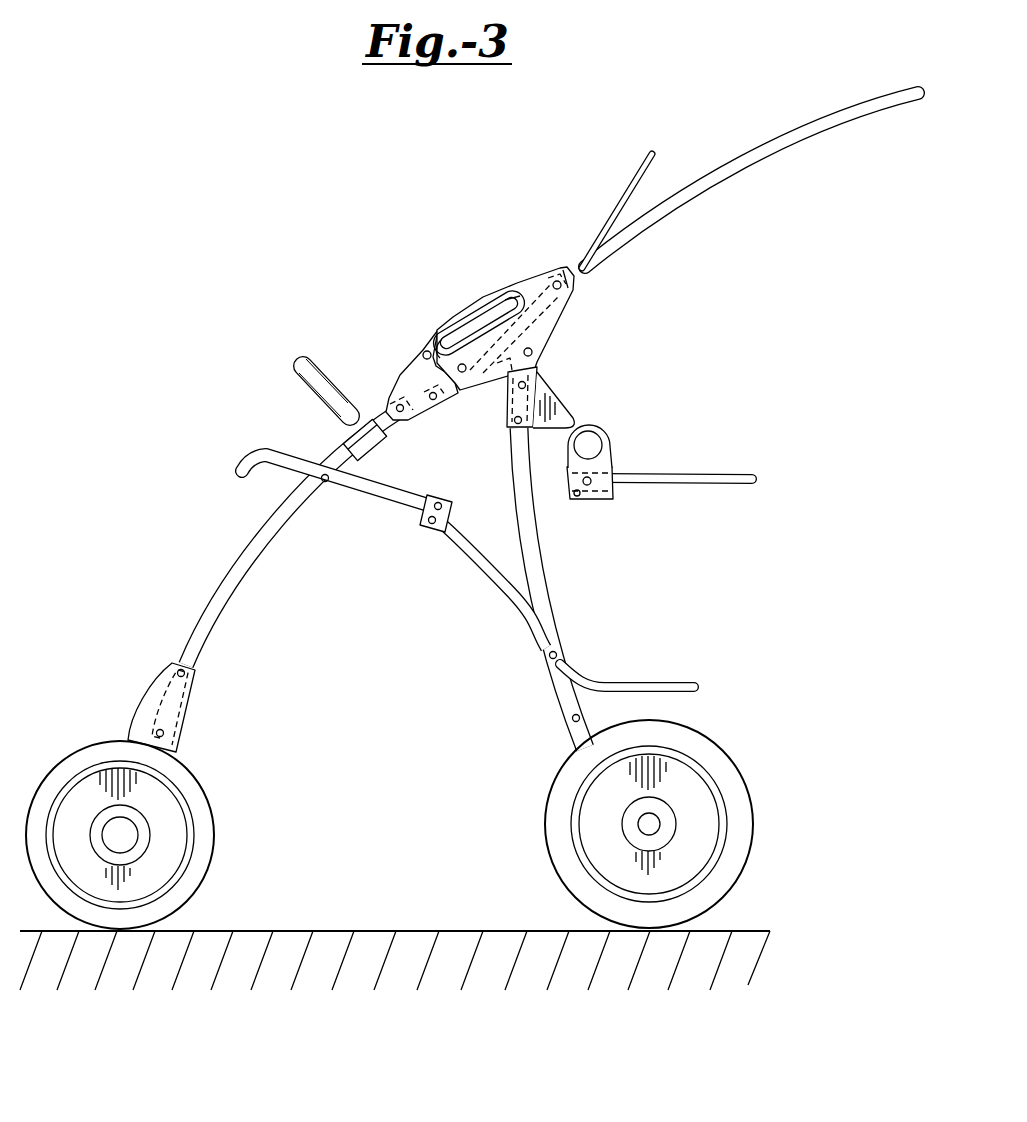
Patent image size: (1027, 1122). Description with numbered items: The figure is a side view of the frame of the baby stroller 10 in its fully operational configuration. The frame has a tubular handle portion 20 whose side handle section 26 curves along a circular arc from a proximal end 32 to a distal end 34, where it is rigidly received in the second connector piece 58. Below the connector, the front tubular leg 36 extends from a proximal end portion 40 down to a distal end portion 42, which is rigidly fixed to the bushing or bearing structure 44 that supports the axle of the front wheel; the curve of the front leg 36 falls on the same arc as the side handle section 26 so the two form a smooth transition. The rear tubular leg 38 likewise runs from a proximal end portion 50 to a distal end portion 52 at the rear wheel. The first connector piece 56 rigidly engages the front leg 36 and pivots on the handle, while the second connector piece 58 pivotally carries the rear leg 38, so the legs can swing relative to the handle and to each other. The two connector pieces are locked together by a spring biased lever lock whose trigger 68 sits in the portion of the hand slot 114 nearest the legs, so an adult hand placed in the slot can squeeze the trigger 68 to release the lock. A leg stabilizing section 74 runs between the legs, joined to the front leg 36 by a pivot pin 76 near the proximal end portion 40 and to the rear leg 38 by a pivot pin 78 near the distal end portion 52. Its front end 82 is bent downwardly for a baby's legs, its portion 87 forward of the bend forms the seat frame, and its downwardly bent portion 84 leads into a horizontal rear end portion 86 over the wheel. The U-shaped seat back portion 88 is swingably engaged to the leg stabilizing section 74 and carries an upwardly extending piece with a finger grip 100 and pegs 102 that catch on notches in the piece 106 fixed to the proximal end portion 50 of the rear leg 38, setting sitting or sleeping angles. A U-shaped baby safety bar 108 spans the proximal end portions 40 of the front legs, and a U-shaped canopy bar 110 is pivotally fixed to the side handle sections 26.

The baby stroller 10 is at (353, 218).
The handle portion 20 is at (850, 122).
The side handle section 26 is at (743, 168).
The proximal end 32 is at (907, 97).
The distal end 34 is at (592, 272).
The front tubular leg 36 is at (235, 598).
The rear tubular leg 38 is at (540, 588).
The proximal end portion 40 is at (377, 417).
The distal end portion 42 is at (183, 658).
The bushing or bearing structure 44 is at (140, 712).
The proximal end portion 50 is at (500, 454).
The distal end portion 52 is at (584, 742).
The first connector piece 56 is at (397, 375).
The second connector piece 58 is at (462, 315).
The trigger 68 is at (478, 322).
The leg stabilizing section 74 is at (373, 507).
The pivot pin 76 is at (326, 487).
The pivot pin 78 is at (557, 653).
The front end 82 is at (240, 460).
The downwardly bent portion 84 is at (498, 595).
The rear end portion 86 is at (690, 675).
The portion of leg stabilizing section 87 is at (363, 487).
The seat back portion 88 is at (705, 470).
The finger grip 100 is at (600, 427).
The peg 102 is at (563, 493).
The notched piece 106 is at (553, 387).
The baby safety bar 108 is at (317, 360).
The canopy bar 110 is at (634, 166).
The hand slot 114 is at (510, 297).